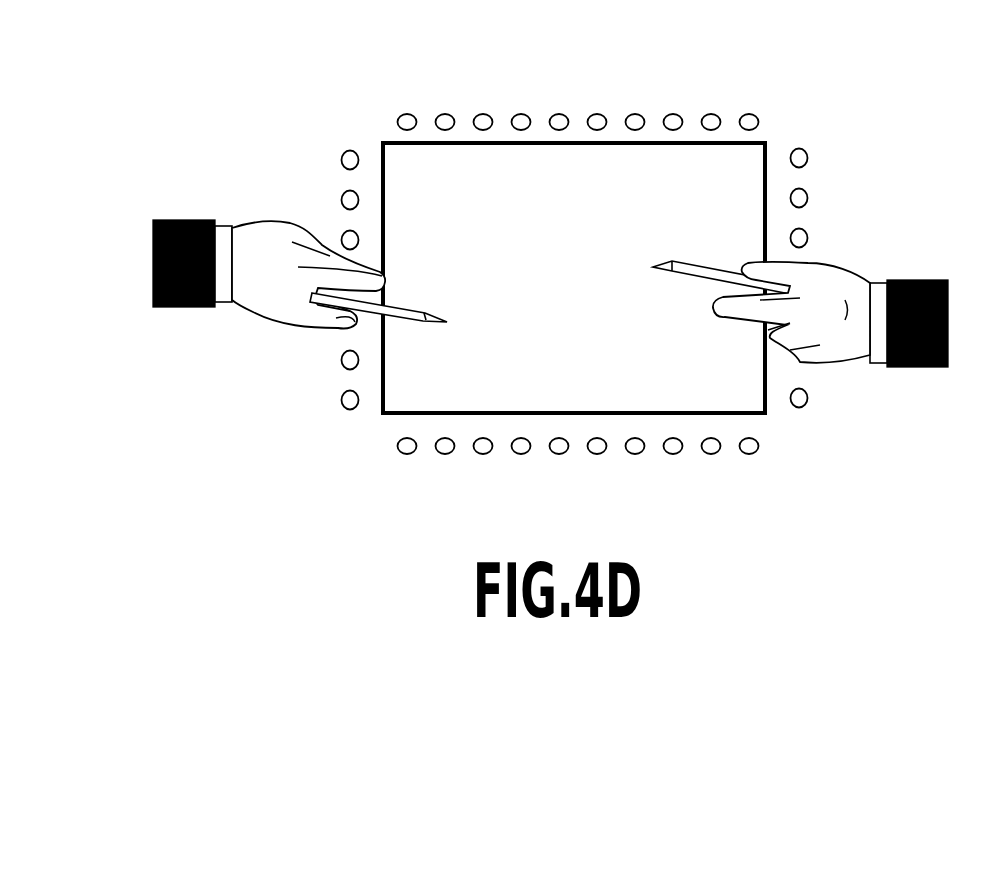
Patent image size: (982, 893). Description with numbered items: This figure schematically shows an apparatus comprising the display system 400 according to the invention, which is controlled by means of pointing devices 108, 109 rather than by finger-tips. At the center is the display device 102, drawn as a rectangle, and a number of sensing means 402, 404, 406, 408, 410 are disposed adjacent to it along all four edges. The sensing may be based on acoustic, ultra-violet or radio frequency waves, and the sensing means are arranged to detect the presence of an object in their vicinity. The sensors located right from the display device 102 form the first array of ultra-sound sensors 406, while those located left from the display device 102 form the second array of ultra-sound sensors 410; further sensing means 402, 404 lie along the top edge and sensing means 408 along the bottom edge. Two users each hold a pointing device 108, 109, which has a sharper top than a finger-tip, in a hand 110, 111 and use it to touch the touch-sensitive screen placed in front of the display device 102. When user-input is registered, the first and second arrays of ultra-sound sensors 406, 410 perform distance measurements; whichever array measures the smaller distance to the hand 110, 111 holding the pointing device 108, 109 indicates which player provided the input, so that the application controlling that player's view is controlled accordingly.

The display system 400 is at (606, 82).
The display device 102 is at (756, 151).
The sensing means 402 is at (403, 115).
The sensing means 404 is at (442, 108).
The first array of ultra-sound sensors 406 is at (807, 192).
The sensing means 408 is at (715, 448).
The second array of ultra-sound sensors 410 is at (343, 157).
The pointing device 108 is at (712, 277).
The pointing device 109 is at (377, 328).
The hand 110 is at (153, 218).
The hand 111 is at (850, 278).